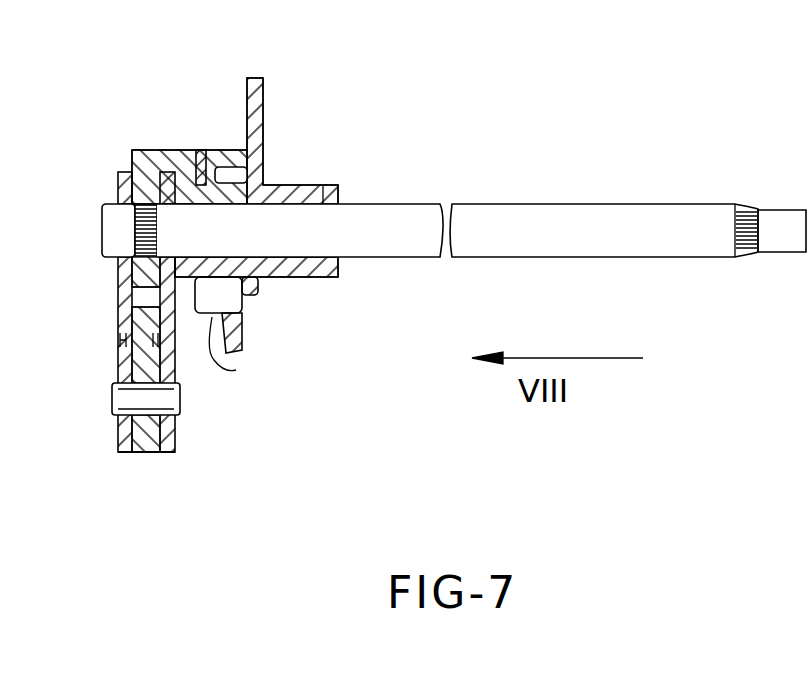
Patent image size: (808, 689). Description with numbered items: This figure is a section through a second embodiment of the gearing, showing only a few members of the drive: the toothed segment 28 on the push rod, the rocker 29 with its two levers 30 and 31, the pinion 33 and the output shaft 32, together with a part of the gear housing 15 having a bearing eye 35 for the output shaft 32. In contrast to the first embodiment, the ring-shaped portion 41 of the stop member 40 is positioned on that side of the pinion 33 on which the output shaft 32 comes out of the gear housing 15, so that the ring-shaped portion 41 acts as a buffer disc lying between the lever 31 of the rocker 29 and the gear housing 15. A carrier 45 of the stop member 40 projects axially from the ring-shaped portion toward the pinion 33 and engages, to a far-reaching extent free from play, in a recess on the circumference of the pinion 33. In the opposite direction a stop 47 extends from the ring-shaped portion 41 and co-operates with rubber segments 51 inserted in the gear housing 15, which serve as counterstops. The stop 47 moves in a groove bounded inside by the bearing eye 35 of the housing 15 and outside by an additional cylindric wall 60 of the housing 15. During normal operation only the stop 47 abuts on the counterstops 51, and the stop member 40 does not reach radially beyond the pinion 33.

The gear housing 15 is at (263, 108).
The toothed segment 28 is at (143, 363).
The rocker 29 is at (104, 312).
The lever 30 is at (120, 438).
The lever 31 is at (175, 443).
The output shaft 32 is at (631, 213).
The pinion 33 is at (117, 270).
The bearing eye 35 is at (334, 187).
The stop member 40 is at (160, 119).
The ring-shaped portion 41 is at (185, 273).
The carrier 45 is at (132, 151).
The stop 47 is at (201, 163).
The rubber segments 51 is at (222, 291).
The cylindric wall 60 is at (242, 355).